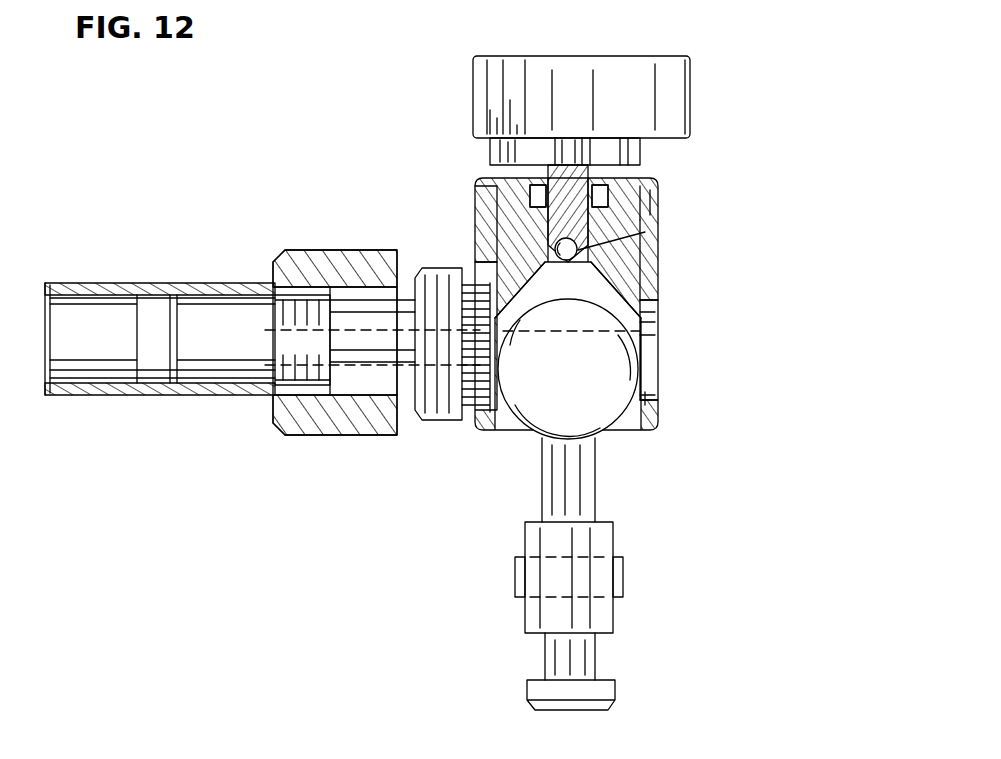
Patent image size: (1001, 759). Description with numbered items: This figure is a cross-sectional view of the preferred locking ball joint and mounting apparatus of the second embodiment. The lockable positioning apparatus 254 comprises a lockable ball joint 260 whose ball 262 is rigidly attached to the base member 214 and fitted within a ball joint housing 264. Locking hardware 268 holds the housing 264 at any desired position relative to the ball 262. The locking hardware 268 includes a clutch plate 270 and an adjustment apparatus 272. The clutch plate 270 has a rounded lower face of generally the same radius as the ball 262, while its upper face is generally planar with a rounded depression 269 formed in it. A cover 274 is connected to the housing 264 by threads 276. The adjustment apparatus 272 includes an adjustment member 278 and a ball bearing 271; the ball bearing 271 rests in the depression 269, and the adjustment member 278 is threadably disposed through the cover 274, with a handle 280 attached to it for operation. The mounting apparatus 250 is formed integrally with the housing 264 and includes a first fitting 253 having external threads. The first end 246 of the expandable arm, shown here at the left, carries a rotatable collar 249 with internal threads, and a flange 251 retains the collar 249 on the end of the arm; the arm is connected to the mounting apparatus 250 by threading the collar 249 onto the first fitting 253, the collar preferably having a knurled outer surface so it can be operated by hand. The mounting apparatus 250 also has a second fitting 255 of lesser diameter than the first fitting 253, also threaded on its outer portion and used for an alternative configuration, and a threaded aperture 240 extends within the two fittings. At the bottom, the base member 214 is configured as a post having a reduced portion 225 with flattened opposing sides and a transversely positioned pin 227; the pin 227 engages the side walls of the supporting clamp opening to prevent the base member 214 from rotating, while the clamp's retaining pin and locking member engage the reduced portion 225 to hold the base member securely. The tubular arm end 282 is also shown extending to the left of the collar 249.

The handle 280 is at (570, 75).
The locking hardware 268 is at (462, 128).
The adjustment apparatus 272 is at (705, 146).
The adjustment member 278 is at (550, 163).
The cover 274 is at (475, 180).
The rounded depression 269 is at (554, 247).
The ball bearing 271 is at (657, 228).
The threads 276 is at (648, 206).
The lockable positioning apparatus 254 is at (692, 272).
The clutch plate 270 is at (660, 300).
The ball joint housing 264 is at (660, 328).
The lockable ball joint 260 is at (672, 357).
The ball 262 is at (540, 408).
The base member 214 is at (636, 557).
The pin 227 is at (515, 582).
The reduced portion 225 is at (600, 663).
The tube 282 is at (85, 283).
The first end 246 is at (243, 403).
The second fitting 255 is at (277, 290).
The first fitting 253 is at (405, 283).
The threaded aperture 240 is at (353, 343).
The rotatable collar 249 is at (350, 435).
The flange 251 is at (397, 430).
The mounting apparatus 250 is at (443, 430).